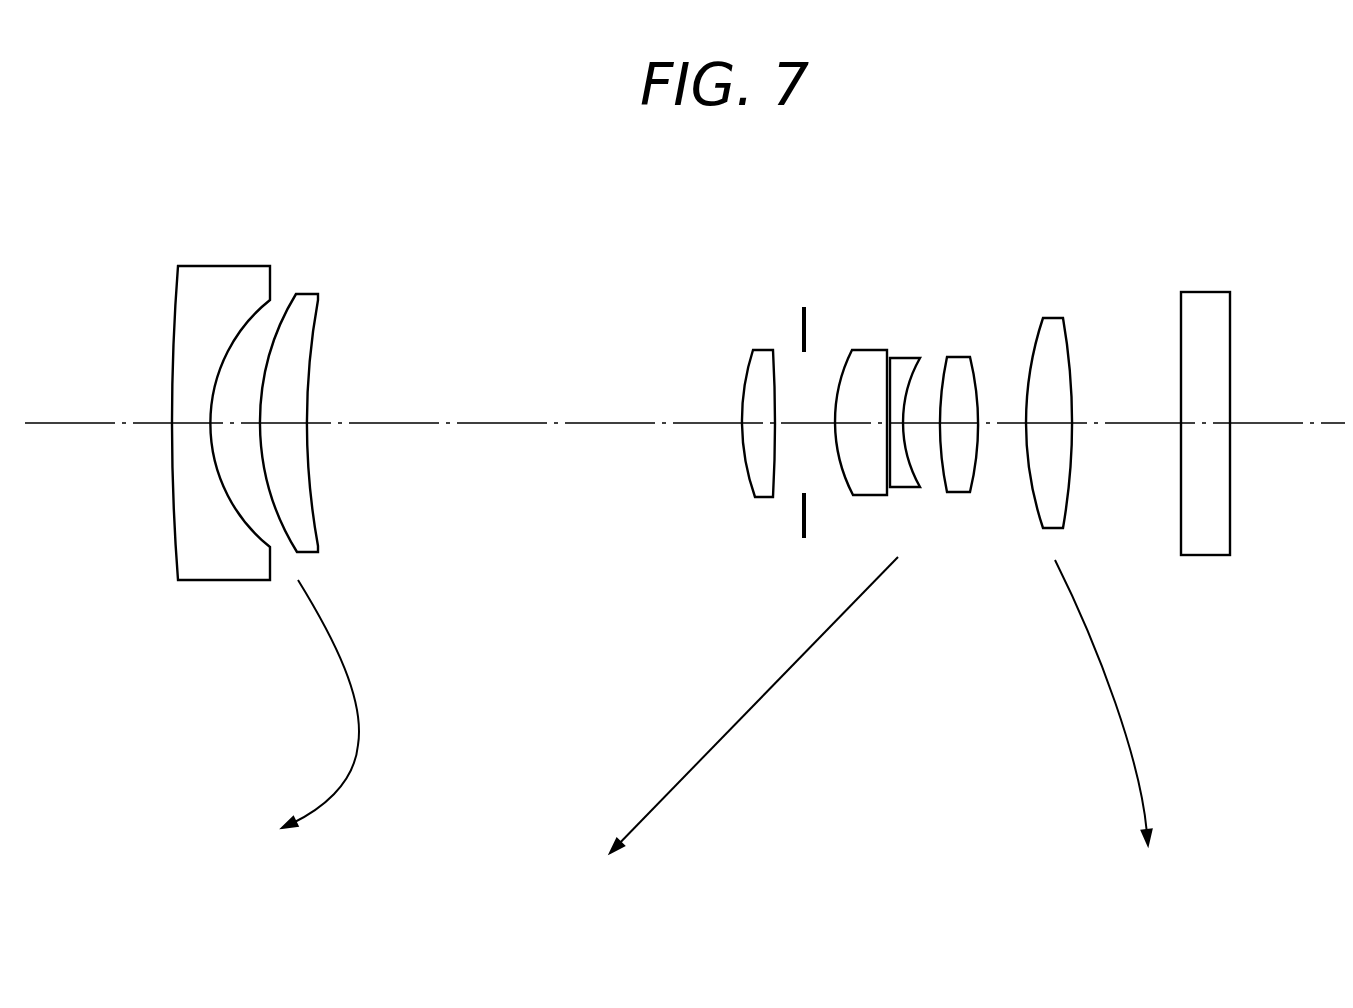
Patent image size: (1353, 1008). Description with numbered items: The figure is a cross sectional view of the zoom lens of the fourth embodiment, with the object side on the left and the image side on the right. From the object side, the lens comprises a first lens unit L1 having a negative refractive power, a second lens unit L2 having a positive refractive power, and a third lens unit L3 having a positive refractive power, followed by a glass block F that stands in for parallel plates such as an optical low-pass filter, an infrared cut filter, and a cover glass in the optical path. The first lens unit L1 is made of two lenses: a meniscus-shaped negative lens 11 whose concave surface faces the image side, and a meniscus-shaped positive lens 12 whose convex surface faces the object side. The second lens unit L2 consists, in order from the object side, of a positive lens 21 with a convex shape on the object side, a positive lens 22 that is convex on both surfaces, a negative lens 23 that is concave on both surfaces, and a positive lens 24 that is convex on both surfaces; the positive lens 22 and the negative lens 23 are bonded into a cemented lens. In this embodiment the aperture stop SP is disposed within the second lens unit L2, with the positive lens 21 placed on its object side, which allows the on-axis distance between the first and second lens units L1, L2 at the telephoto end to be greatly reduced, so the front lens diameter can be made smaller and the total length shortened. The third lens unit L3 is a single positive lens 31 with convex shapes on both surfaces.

The first lens unit L1 is at (159, 200).
The meniscus-shaped negative lens 11 is at (213, 265).
The meniscus-shaped positive lens 12 is at (307, 293).
The second lens unit L2 is at (985, 267).
The positive lens 21 is at (762, 347).
The positive lens 22 is at (873, 350).
The negative lens 23 is at (905, 357).
The positive lens 24 is at (958, 355).
The aperture stop SP is at (803, 532).
The third lens unit L3 is at (1017, 267).
The positive lens 31 is at (1050, 317).
The glass block F is at (1230, 320).